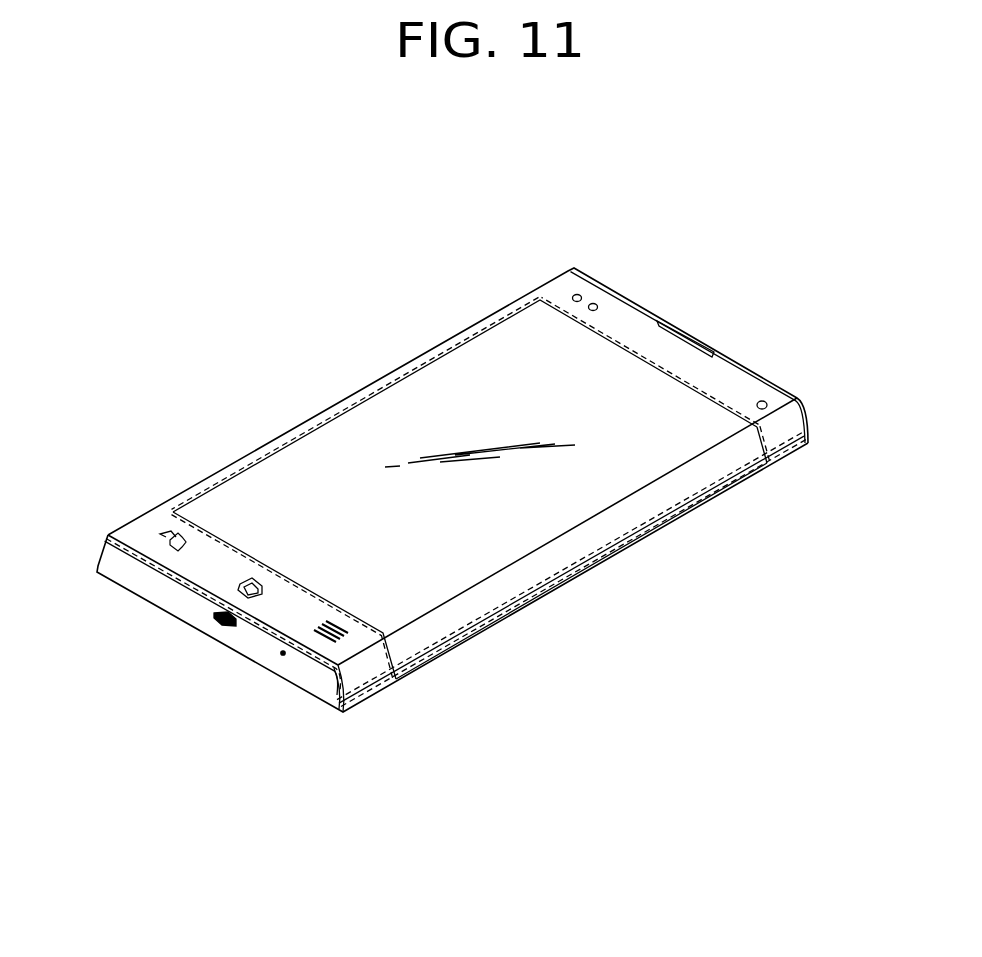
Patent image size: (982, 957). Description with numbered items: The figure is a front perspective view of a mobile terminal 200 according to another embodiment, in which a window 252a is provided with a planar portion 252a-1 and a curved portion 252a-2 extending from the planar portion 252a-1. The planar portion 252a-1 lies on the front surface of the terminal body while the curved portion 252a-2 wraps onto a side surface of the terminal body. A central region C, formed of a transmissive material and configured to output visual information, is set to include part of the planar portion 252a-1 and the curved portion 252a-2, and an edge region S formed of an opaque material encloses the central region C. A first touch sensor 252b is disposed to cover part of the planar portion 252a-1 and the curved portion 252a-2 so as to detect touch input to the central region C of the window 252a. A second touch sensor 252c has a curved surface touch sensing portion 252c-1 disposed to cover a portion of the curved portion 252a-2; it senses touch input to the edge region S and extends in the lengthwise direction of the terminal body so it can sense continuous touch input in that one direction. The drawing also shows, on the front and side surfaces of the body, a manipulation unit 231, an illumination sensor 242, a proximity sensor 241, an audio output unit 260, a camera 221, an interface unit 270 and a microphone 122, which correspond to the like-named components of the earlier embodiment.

The mobile terminal 200 is at (268, 340).
The first touch sensor 252b is at (437, 398).
The window 252a is at (500, 788).
The planar portion 252a-1 is at (373, 605).
The curved portion 252a-2 is at (413, 657).
The second touch sensor 252c is at (338, 652).
The curved surface touch sensing portion 252c-1 is at (633, 543).
The central region C is at (283, 480).
The edge region S is at (228, 477).
The back key 231 is at (165, 545).
The proximity sensor 242 is at (578, 294).
The illumination sensor 241 is at (596, 303).
The audio output unit (receiver) 260 is at (685, 340).
The camera 221 is at (765, 401).
The interface unit 270 is at (215, 621).
The microphone 122 is at (281, 655).